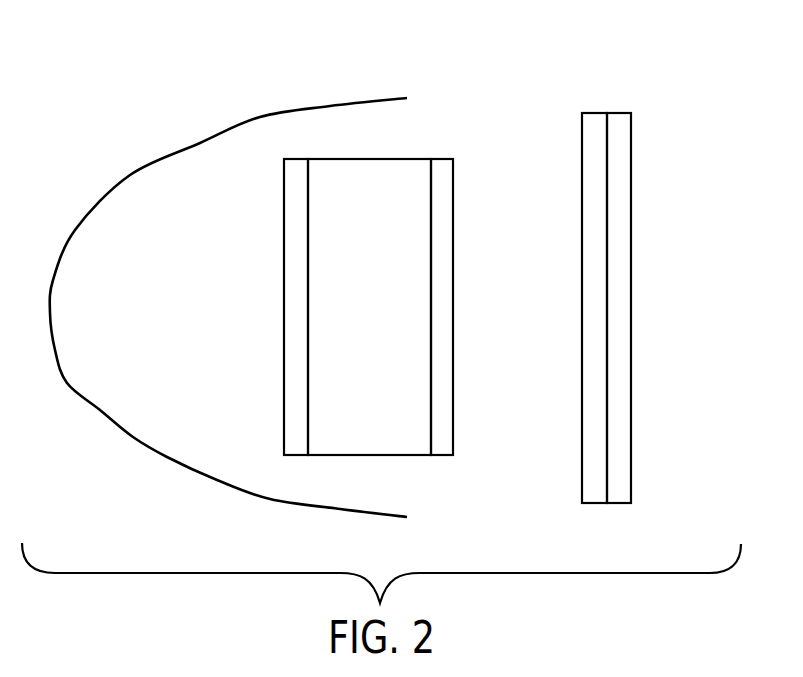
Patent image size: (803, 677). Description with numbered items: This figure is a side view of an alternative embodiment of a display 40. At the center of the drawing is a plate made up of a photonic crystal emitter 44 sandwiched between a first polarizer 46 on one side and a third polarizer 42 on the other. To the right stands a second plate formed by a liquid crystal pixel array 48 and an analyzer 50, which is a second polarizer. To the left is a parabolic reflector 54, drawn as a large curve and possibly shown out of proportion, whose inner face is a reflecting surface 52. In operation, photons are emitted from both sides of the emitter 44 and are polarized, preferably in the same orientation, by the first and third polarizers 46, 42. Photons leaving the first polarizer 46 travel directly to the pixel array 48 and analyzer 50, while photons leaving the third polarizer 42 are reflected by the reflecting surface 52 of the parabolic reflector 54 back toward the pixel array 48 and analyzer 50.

The display 40 is at (708, 156).
The third polarizer 42 is at (297, 159).
The photonic crystal emitter 44 is at (397, 159).
The first polarizer 46 is at (442, 159).
The liquid crystal pixel array 48 is at (594, 113).
The analyzer (second polarizer) 50 is at (620, 113).
The reflecting surface 52 is at (130, 175).
The parabolic reflector 54 is at (63, 202).